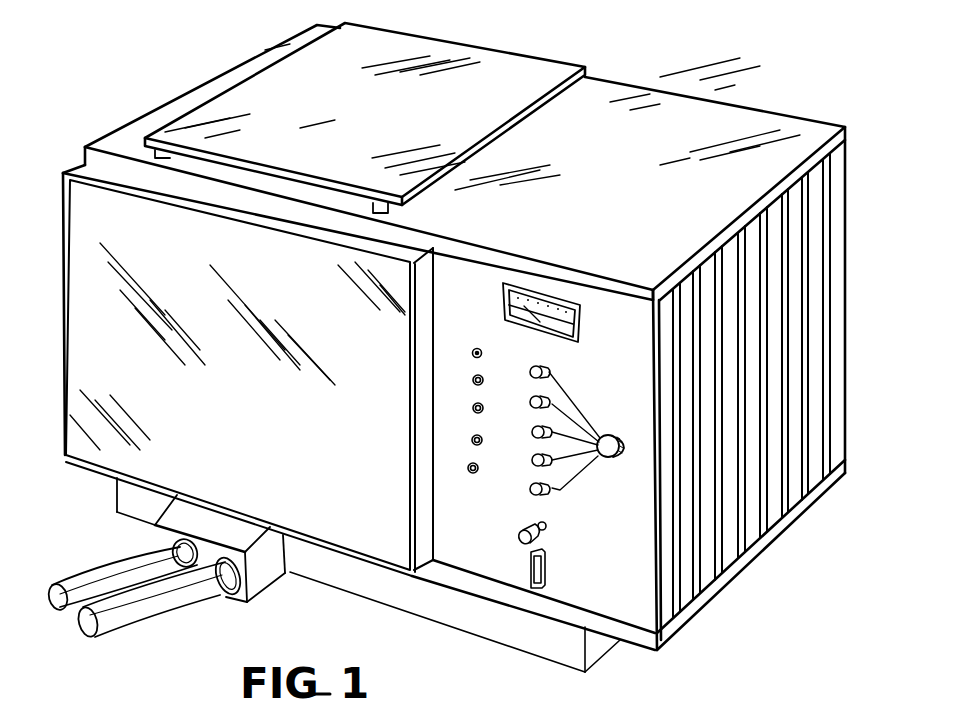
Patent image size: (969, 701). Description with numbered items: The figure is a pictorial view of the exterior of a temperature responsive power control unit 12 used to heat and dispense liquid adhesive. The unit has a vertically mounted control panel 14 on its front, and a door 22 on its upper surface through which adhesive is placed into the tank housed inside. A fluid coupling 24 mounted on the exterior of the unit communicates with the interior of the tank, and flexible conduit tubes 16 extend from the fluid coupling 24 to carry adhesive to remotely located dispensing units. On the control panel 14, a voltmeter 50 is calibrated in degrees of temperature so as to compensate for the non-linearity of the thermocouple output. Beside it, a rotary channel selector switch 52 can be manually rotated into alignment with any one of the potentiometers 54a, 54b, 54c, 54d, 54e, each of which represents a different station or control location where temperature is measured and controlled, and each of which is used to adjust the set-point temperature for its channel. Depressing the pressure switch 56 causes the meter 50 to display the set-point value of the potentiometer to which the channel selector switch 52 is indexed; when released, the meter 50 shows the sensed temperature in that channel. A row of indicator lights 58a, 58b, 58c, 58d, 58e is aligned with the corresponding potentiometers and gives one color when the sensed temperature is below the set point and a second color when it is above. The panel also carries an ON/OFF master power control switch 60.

The temperature responsive power control unit 12 is at (697, 90).
The control panel 14 is at (613, 320).
The flexible conduit tubes 16 is at (127, 610).
The door 22 is at (492, 85).
The fluid coupling 24 is at (262, 578).
The voltmeter 50 is at (553, 292).
The rotary channel selector switch 52 is at (619, 436).
The potentiometer 54a is at (535, 366).
The potentiometer 54b is at (531, 404).
The potentiometer 54c is at (535, 438).
The potentiometer 54d is at (533, 467).
The potentiometer 54e is at (532, 496).
The pressure switch 56 is at (548, 538).
The indicator light 58a is at (471, 352).
The indicator light 58b is at (472, 380).
The indicator light 58c is at (472, 410).
The indicator light 58d is at (471, 441).
The indicator light 58e is at (469, 473).
The ON/OFF master power control switch 60 is at (548, 570).